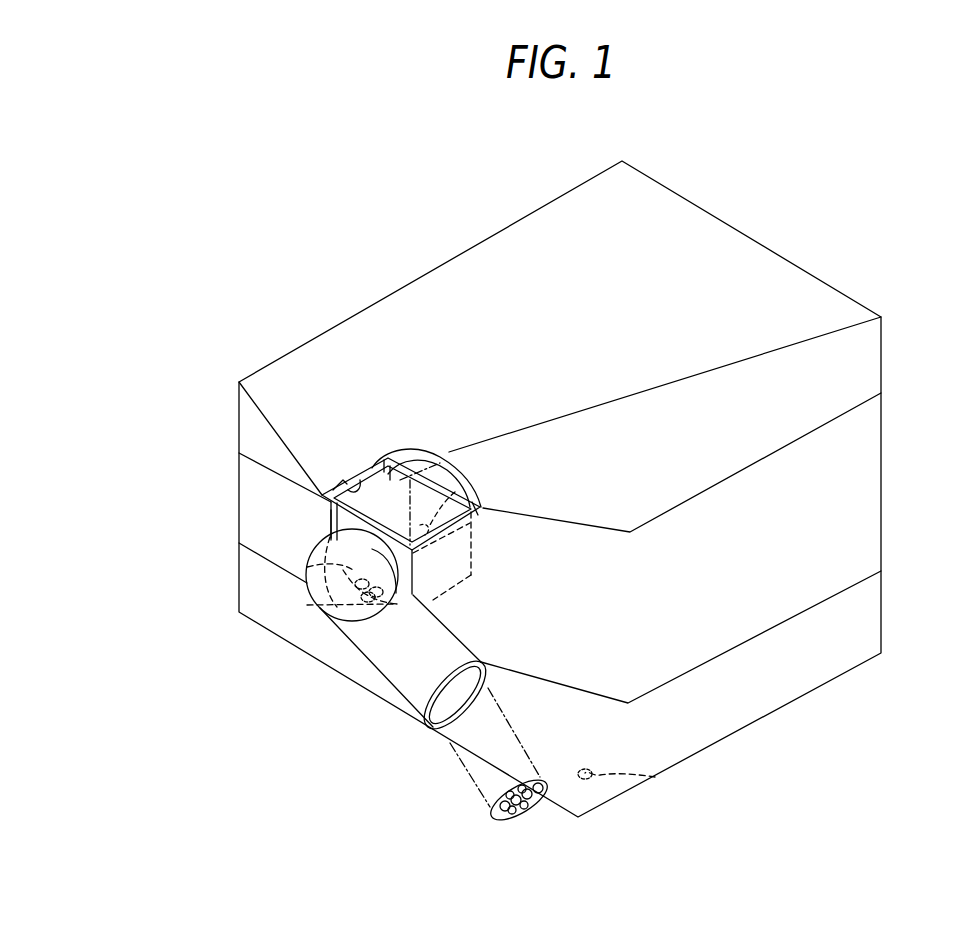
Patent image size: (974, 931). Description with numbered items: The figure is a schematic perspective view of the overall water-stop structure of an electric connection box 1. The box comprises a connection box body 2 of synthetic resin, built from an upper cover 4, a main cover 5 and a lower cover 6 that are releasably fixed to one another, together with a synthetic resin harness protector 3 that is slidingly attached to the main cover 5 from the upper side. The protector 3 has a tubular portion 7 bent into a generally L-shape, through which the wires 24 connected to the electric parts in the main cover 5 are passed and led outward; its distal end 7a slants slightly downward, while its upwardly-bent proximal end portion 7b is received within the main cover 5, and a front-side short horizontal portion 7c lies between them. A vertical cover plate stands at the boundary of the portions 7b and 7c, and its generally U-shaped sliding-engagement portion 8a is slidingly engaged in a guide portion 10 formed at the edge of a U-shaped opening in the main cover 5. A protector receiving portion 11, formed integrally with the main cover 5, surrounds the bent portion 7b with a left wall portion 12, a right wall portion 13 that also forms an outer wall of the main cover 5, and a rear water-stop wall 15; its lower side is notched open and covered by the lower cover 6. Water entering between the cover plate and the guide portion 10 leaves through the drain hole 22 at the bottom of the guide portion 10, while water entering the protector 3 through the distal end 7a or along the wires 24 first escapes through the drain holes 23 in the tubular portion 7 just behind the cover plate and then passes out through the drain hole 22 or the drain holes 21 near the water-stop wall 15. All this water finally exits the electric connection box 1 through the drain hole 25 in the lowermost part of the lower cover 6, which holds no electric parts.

The electric connection box 1 is at (940, 254).
The connection box body 2 is at (886, 451).
The harness protector 3 is at (352, 658).
The upper cover 4 is at (868, 358).
The main cover 5 is at (862, 513).
The lower cover 6 is at (862, 634).
The tubular portion 7 is at (363, 625).
The distal end 7a is at (437, 692).
The proximal end portion 7b is at (430, 482).
The short horizontal portion 7c is at (335, 537).
The sliding-engagement portion 8a is at (333, 487).
The guide portion 10 is at (333, 523).
The protector receiving portion 11 is at (373, 488).
The left wall portion 12 is at (347, 473).
The right wall portion 13 is at (447, 557).
The water-stop wall 15 is at (483, 506).
The drain holes 21 is at (467, 480).
The drain hole 22 is at (307, 605).
The drain holes 23 is at (307, 567).
The wires 24 is at (490, 812).
The drain hole 25 is at (655, 777).